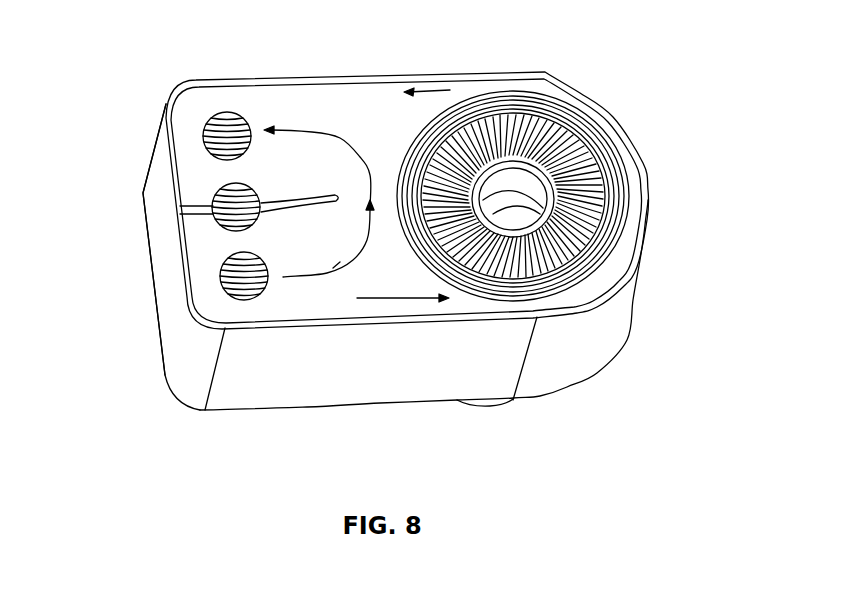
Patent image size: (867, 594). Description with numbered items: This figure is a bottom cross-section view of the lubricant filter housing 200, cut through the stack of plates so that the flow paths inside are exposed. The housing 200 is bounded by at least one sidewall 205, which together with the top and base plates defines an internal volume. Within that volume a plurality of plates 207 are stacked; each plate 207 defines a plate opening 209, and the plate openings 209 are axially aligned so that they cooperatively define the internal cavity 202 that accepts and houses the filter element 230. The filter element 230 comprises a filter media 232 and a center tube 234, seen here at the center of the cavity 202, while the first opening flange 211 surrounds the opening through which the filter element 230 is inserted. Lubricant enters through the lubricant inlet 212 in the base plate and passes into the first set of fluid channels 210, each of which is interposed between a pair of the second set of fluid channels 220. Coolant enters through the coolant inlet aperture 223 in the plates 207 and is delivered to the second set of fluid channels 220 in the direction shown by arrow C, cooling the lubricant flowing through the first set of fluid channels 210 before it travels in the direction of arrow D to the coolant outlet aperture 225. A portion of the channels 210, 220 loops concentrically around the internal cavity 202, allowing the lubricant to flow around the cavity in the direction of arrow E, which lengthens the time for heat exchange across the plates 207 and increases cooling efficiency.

The lubricant filter housing 200 is at (453, 56).
The sidewall 205 is at (160, 342).
The second set of fluid channels 220 is at (380, 78).
The plates 207 is at (247, 100).
The coolant outlet aperture 225 is at (197, 143).
The lubricant inlet 212 is at (220, 222).
The coolant inlet aperture 223 is at (220, 283).
The first set of fluid channels 210 is at (510, 112).
The plate opening 209 is at (570, 120).
The filter element 230 is at (578, 138).
The center tube 234 is at (620, 243).
The internal cavity 202 is at (617, 168).
The filter media 232 is at (627, 217).
The first opening flange 211 is at (505, 405).
The arrow D is at (313, 126).
The arrow E is at (397, 300).
The arrow C is at (333, 268).